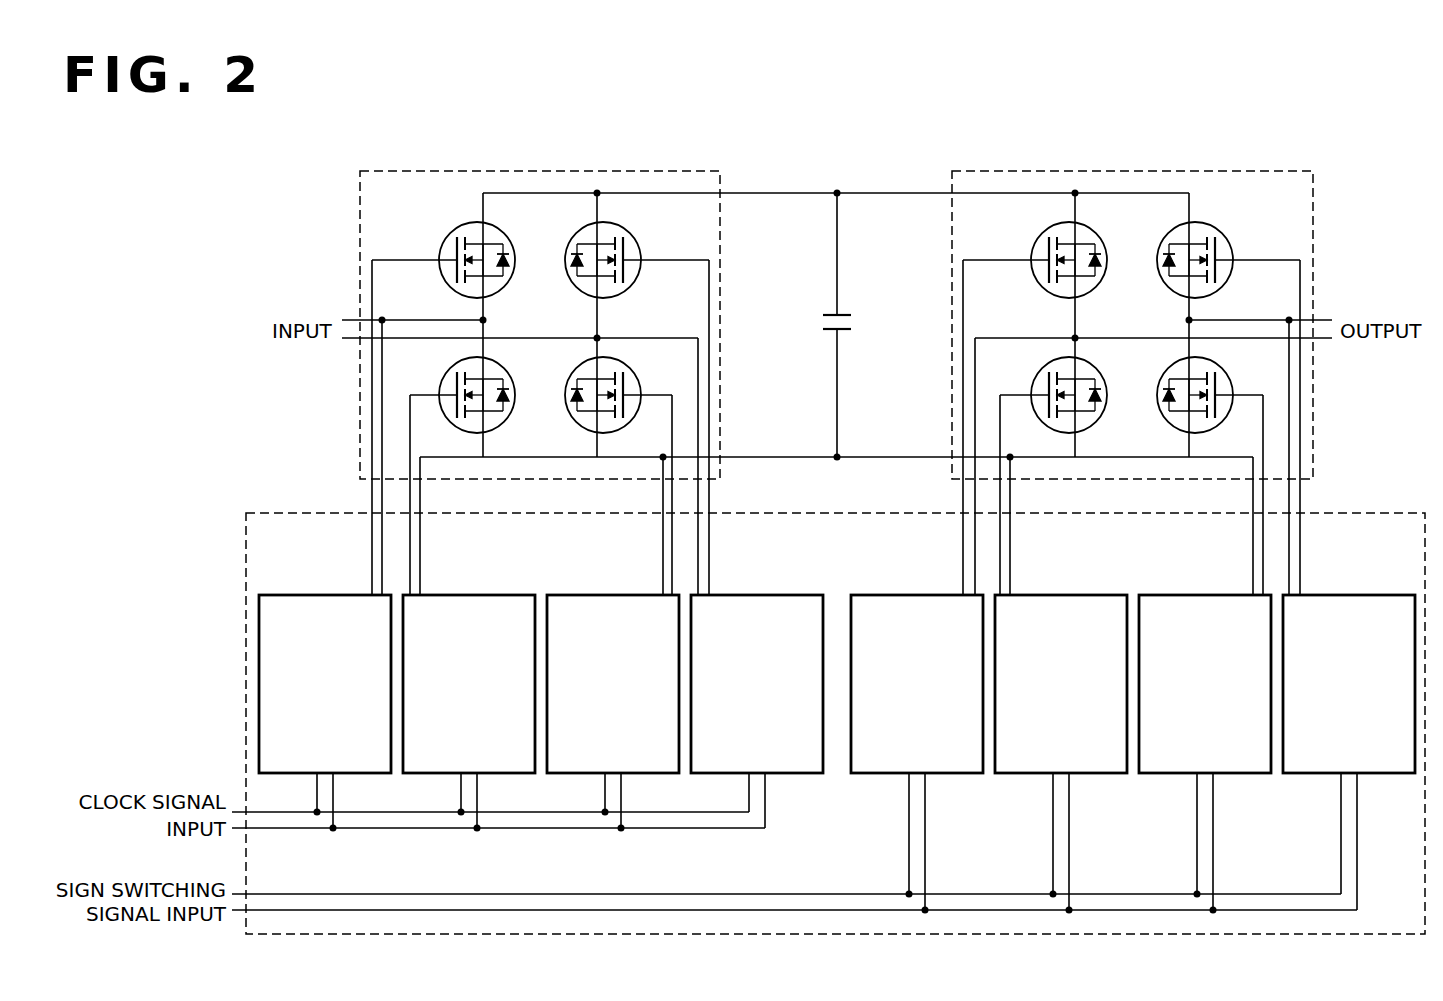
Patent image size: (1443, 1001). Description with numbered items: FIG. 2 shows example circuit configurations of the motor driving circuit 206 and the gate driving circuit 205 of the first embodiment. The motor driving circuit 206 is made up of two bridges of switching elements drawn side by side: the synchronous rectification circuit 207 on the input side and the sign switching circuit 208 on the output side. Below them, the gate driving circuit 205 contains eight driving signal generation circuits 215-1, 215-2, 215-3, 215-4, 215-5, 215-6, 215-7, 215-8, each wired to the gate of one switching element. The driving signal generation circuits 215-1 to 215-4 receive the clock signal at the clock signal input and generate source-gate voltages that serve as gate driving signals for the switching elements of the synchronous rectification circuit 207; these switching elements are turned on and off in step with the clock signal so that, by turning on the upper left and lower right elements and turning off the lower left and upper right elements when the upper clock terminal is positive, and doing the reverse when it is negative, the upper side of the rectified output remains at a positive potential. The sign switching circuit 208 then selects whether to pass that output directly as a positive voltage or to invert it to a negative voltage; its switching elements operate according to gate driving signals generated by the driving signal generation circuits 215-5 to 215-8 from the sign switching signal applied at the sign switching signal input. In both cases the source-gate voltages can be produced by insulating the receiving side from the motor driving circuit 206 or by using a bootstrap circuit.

The gate driving circuit 205 is at (246, 546).
The motor driving circuit 206 is at (428, 99).
The synchronous rectification circuit 207 is at (533, 171).
The sign switching circuit 208 is at (1155, 171).
The driving signal generation circuit 215-1 is at (322, 594).
The driving signal generation circuit 215-2 is at (466, 594).
The driving signal generation circuit 215-3 is at (610, 594).
The driving signal generation circuit 215-4 is at (754, 594).
The driving signal generation circuit 215-5 is at (914, 594).
The driving signal generation circuit 215-6 is at (1058, 594).
The driving signal generation circuit 215-7 is at (1202, 594).
The driving signal generation circuit 215-8 is at (1346, 594).